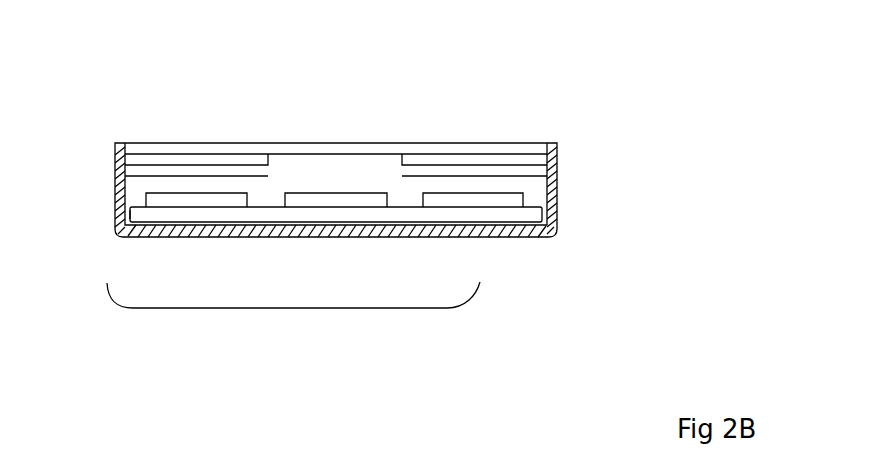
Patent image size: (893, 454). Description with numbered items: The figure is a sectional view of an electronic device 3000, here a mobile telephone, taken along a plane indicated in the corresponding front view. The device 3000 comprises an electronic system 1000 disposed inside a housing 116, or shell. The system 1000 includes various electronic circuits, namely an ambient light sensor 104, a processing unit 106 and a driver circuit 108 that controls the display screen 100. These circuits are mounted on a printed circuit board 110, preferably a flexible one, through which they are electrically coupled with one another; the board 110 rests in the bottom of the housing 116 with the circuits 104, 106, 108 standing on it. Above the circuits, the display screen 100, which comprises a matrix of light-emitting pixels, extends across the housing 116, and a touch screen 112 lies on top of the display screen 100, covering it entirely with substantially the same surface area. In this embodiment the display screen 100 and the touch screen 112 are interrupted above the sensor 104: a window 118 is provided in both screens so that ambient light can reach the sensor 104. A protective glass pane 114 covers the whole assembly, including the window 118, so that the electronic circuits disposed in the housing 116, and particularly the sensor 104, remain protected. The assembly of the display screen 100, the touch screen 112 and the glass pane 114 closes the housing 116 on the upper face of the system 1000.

The electronic device 3000 is at (137, 95).
The electronic system 1000 is at (291, 308).
The display screen 100 is at (258, 177).
The ambient light sensor 104 is at (312, 202).
The processing unit 106 is at (188, 200).
The driver circuit 108 is at (467, 202).
The printed circuit board 110 is at (143, 212).
The touch screen 112 is at (418, 162).
The protective glass pane 114 is at (533, 147).
The housing 116 is at (557, 165).
The window 118 is at (268, 173).